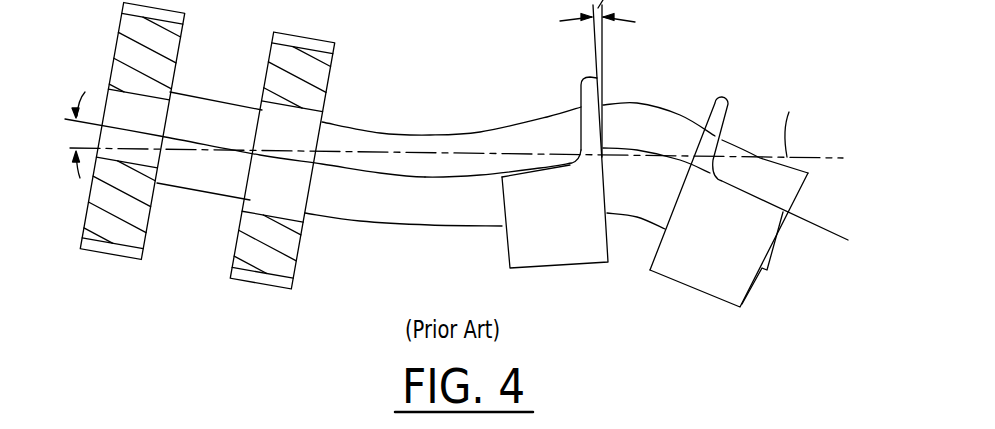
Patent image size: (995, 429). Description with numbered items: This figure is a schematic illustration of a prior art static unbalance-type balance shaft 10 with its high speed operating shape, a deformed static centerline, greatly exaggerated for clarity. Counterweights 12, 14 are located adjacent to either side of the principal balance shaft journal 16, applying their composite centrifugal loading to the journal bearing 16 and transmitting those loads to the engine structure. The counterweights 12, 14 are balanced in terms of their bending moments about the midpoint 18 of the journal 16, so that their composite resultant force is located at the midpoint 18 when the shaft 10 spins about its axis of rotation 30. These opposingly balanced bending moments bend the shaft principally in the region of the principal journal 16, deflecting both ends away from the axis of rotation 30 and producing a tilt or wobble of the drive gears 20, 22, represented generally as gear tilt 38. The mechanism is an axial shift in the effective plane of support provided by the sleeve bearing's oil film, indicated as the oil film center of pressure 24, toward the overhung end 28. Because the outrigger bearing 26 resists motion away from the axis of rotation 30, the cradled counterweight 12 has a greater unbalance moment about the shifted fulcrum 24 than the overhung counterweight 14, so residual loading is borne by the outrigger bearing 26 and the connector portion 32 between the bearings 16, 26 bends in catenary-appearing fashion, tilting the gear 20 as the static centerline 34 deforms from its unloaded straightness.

The balance shaft 10 is at (438, 88).
The counterweight 12 is at (538, 243).
The counterweight 14 is at (738, 287).
The principal balance shaft journal 16 is at (653, 127).
The midpoint of the journal 18 is at (635, 222).
The drive gear 20 is at (117, 233).
The drive gear 22 is at (267, 260).
The oil film center of pressure 24 is at (215, 197).
The outrigger bearing 26 is at (208, 103).
The overhung end 28 is at (814, 170).
The axis of rotation 30 is at (471, 134).
The connector portion 32 is at (418, 222).
The static centerline 34 is at (465, 177).
The gear tilt 38 is at (75, 133).